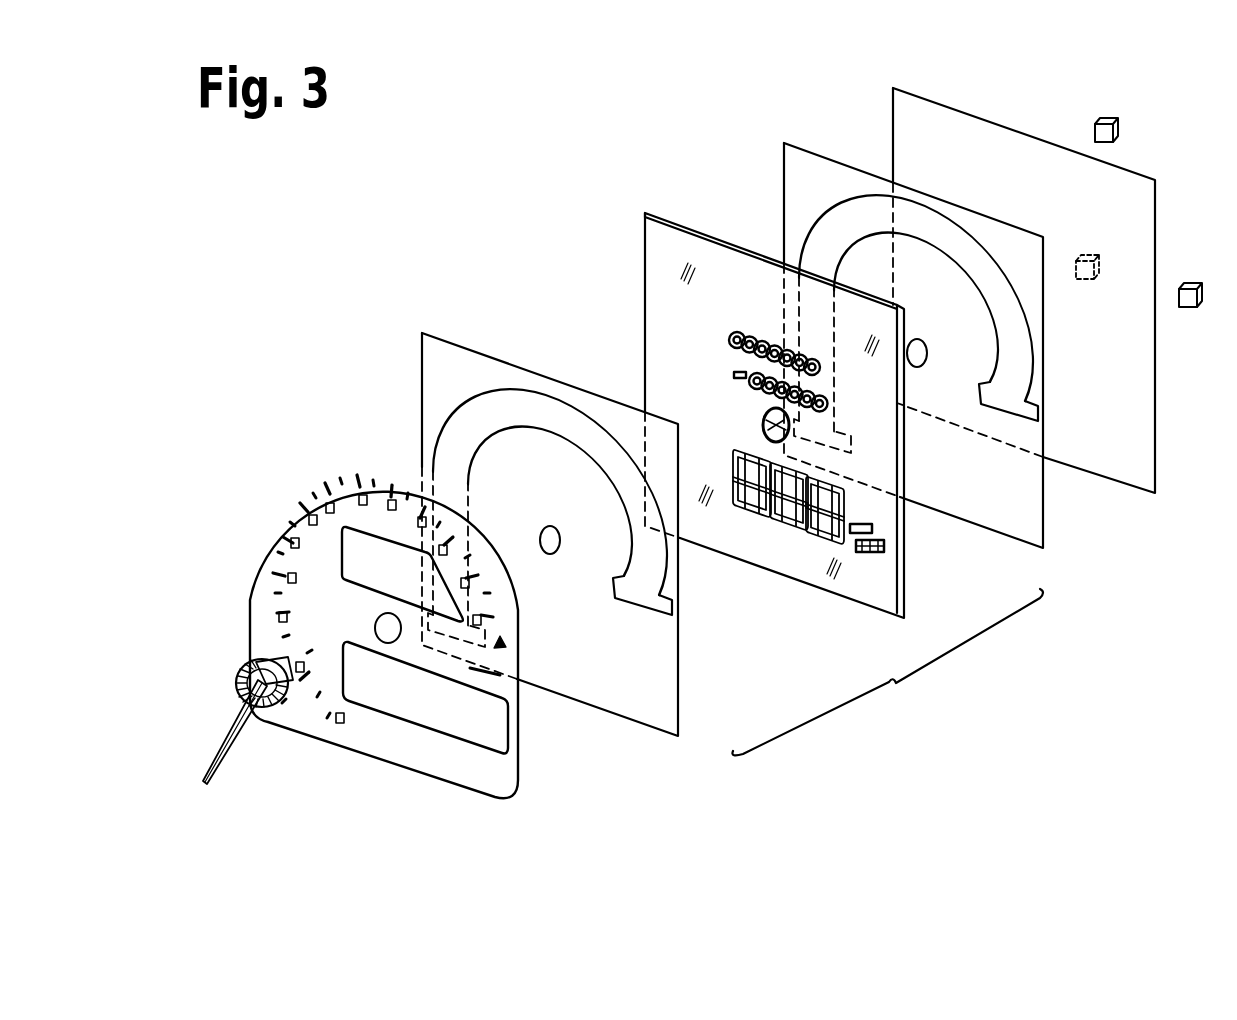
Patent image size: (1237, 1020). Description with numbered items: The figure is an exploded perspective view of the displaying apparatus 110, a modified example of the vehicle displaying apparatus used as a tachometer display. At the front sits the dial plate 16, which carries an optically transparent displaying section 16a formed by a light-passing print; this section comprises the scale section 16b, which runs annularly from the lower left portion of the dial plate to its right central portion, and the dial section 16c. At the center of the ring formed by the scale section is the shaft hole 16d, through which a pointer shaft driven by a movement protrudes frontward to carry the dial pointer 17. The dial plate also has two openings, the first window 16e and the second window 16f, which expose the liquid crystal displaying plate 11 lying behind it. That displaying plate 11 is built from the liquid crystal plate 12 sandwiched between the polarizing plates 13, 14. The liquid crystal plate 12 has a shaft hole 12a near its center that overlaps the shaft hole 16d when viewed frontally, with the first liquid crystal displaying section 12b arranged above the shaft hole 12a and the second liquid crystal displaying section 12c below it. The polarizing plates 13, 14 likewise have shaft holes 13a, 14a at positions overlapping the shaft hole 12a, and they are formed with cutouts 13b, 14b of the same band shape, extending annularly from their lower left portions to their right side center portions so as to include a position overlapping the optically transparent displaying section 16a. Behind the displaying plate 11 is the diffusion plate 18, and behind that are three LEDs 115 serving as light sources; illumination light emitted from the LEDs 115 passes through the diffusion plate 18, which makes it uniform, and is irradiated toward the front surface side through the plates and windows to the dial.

The displaying apparatus 110 is at (541, 299).
The liquid crystal displaying plate 11 is at (887, 672).
The liquid crystal plate 12 is at (742, 443).
The shaft hole 12a is at (764, 415).
The first liquid crystal displaying section 12b is at (731, 336).
The second liquid crystal displaying section 12c is at (746, 518).
The polarizing plate 13 is at (592, 528).
The shaft hole 13a is at (549, 554).
The cutout 13b is at (483, 392).
The polarizing plate 14 is at (879, 377).
The shaft hole 14a is at (927, 362).
The cutout 14b is at (815, 237).
The dial plate 16 is at (339, 611).
The optically transparent displaying section 16a is at (333, 554).
The scale section 16b is at (335, 510).
The dial section 16c is at (300, 542).
The shaft hole 16d is at (380, 628).
The first window 16e is at (378, 531).
The second window 16f is at (402, 727).
The dial pointer 17 is at (242, 738).
The diffusion plate 18 is at (1122, 484).
The LED 115 is at (1120, 131).